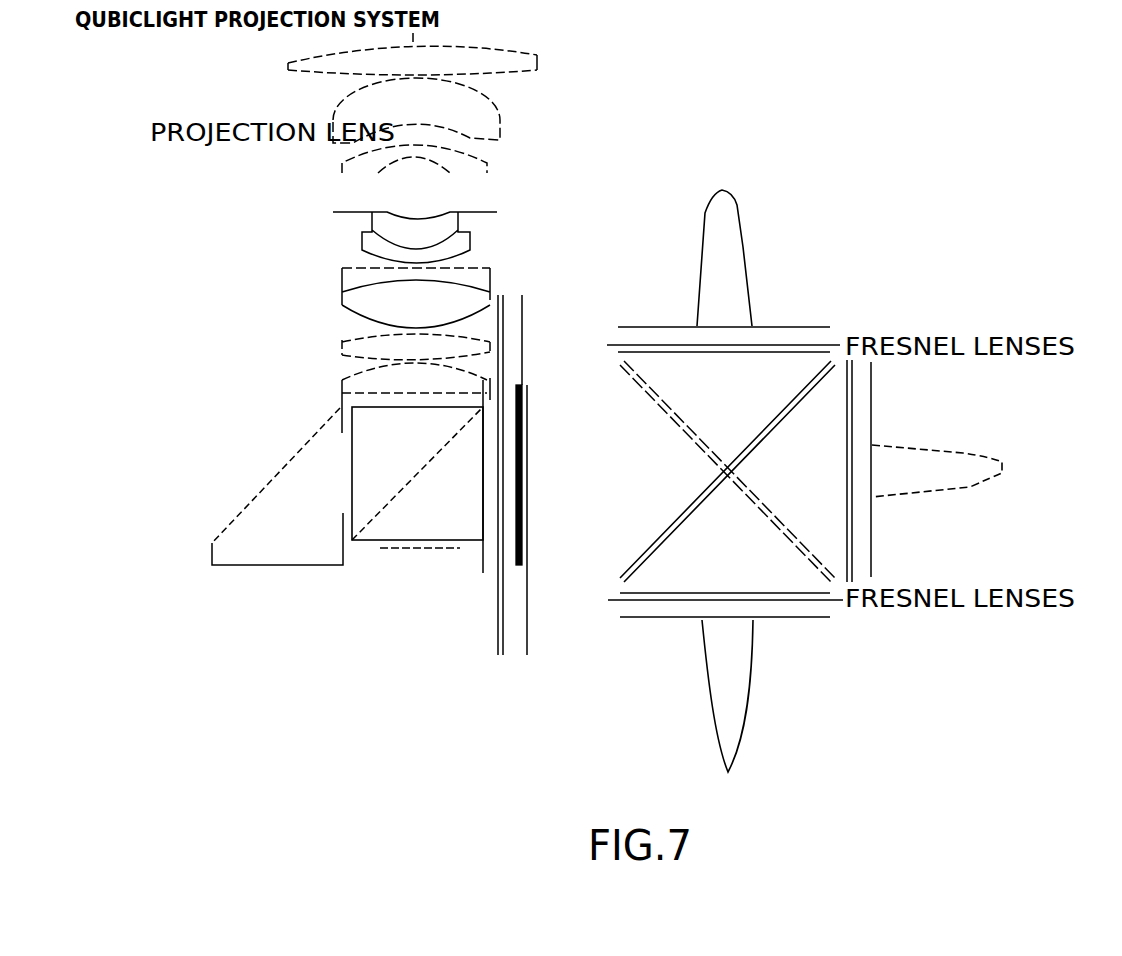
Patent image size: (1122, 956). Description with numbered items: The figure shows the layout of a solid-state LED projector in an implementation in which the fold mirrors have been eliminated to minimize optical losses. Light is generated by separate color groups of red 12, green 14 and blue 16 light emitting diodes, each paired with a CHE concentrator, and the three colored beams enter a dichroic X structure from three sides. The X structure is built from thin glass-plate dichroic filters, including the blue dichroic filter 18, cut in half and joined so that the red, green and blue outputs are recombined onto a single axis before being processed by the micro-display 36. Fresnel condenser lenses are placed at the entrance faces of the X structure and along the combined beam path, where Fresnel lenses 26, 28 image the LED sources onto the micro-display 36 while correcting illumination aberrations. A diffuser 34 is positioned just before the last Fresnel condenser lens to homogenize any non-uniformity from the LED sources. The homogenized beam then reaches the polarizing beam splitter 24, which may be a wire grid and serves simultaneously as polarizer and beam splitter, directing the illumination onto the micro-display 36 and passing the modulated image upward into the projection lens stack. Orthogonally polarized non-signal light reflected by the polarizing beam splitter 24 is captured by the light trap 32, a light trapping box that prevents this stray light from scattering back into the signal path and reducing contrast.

The red light emitting diodes 12 is at (752, 690).
The green light emitting diodes 14 is at (967, 453).
The blue light emitting diodes 16 is at (745, 262).
The blue dichroic filter 18 is at (806, 372).
The polarizing beam splitter 24 is at (352, 542).
The Fresnel lens 26 is at (533, 553).
The Fresnel lens 28 is at (502, 328).
The light trap 32 is at (337, 483).
The diffuser 34 is at (517, 387).
The micro-display 36 is at (437, 550).